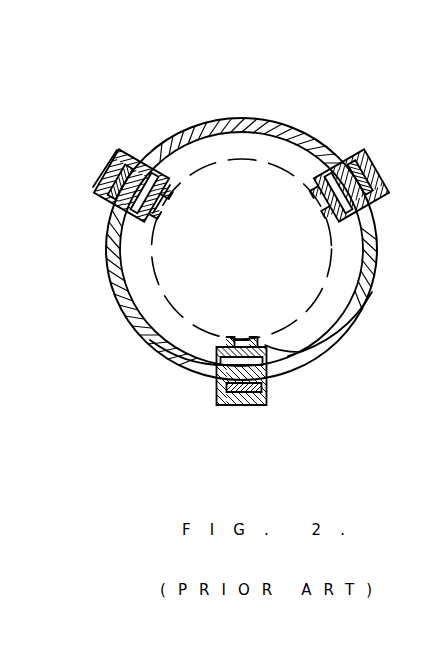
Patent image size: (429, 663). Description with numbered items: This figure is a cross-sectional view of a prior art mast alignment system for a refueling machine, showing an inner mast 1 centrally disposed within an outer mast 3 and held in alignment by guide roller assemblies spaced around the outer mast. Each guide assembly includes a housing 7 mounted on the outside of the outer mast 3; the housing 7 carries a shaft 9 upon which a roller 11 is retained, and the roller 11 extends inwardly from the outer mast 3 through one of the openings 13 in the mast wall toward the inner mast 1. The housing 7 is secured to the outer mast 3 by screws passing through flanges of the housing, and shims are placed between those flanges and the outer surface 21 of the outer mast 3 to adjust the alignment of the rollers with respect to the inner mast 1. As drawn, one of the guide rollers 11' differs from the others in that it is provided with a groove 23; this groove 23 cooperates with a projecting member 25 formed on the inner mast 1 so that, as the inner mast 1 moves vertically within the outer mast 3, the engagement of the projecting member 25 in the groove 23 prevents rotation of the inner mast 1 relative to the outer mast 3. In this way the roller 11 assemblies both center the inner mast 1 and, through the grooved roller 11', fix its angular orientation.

The inner mast 1 is at (203, 163).
The outer mast 3 is at (262, 128).
The housing 7 is at (118, 160).
The shaft 9 is at (197, 352).
The roller 11 is at (183, 209).
The guide roller 11' is at (300, 380).
The openings 13 is at (95, 205).
The outer surface 21 is at (338, 343).
The groove 23 is at (250, 340).
The projecting member 25 is at (238, 340).